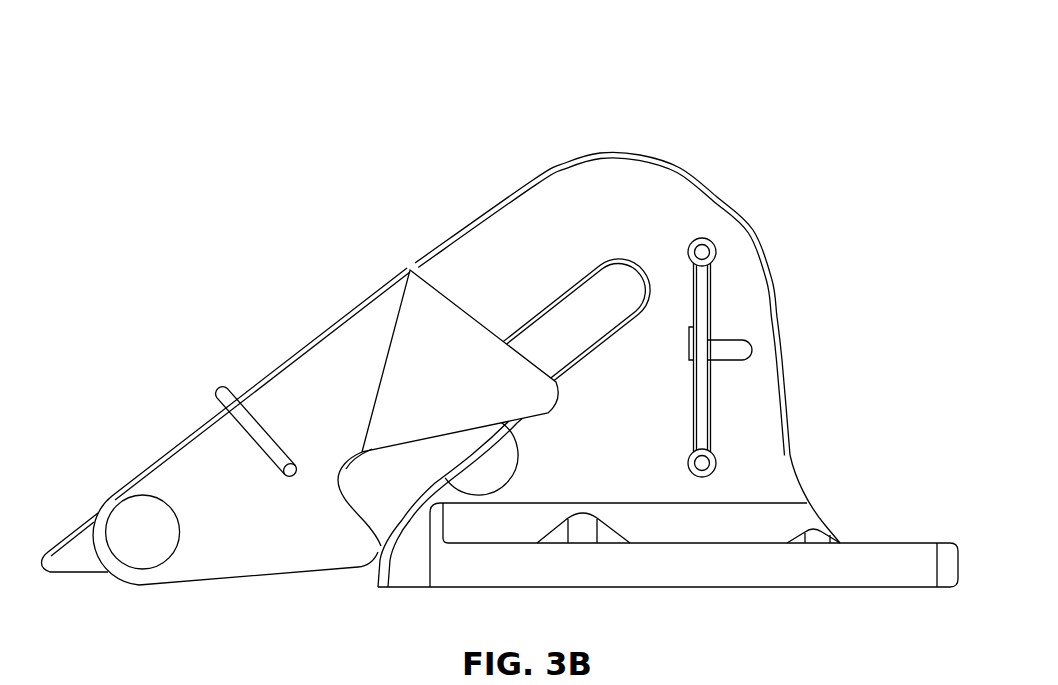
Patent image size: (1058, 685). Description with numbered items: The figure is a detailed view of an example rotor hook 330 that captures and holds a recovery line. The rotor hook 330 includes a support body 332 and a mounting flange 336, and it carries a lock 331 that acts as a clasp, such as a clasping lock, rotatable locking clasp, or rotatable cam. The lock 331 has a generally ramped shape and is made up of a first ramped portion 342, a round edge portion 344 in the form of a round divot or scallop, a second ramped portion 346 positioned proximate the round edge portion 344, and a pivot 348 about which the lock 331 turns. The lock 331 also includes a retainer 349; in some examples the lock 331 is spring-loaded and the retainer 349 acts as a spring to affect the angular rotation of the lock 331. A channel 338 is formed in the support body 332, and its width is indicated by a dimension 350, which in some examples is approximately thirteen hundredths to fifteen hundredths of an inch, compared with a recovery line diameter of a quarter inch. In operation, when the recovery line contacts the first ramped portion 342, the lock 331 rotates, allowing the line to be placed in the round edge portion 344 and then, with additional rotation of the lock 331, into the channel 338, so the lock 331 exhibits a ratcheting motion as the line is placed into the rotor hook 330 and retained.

The rotor hook 330 is at (733, 147).
The lock 331 is at (232, 290).
The support body 332 is at (743, 258).
The mounting flange 336 is at (780, 577).
The channel 338 is at (610, 258).
The first ramped portion 342 is at (233, 567).
The round edge portion 344 is at (358, 500).
The second ramped portion 346 is at (415, 417).
The pivot 348 is at (133, 535).
The retainer 349 is at (220, 392).
The dimension 350 is at (615, 340).